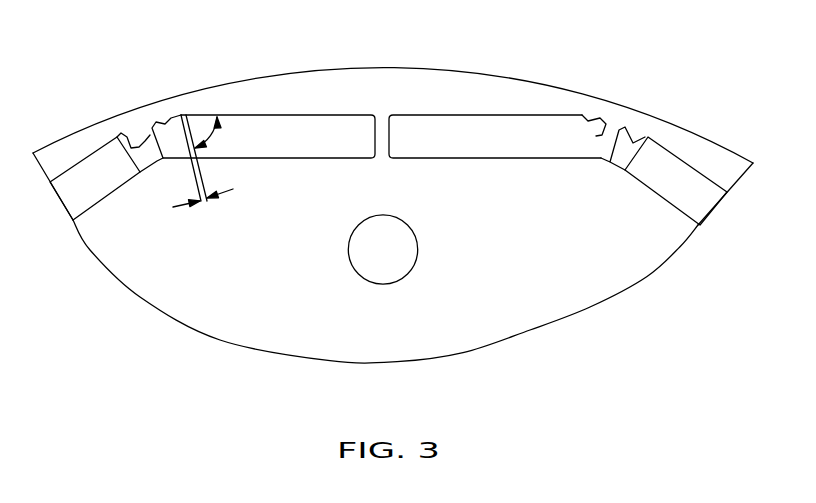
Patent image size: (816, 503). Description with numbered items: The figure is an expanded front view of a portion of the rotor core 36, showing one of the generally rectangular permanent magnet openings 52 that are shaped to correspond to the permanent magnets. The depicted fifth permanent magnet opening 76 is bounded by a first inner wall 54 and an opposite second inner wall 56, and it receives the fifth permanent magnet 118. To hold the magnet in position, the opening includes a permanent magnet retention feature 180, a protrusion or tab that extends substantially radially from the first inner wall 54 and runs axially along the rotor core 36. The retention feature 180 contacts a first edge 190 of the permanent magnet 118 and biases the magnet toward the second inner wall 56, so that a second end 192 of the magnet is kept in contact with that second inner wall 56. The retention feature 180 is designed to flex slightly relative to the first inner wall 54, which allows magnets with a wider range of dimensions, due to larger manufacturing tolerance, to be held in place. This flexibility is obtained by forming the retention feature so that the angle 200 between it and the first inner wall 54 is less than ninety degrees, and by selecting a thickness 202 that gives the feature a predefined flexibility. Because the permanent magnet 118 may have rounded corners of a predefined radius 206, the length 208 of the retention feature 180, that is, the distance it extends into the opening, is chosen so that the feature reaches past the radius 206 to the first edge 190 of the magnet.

The rotor core 36 is at (619, 104).
The permanent magnet openings 52 is at (72, 146).
The first inner wall 54 is at (170, 114).
The second inner wall 56 is at (375, 144).
The fifth permanent magnet opening 76 is at (279, 143).
The fifth permanent magnet 118 is at (180, 147).
The permanent magnet retention feature 180 is at (147, 138).
The first edge 190 is at (186, 117).
The second end 192 is at (371, 116).
The angle 200 is at (219, 119).
The thickness 202 is at (222, 196).
The radius 206 is at (583, 116).
The length 208 is at (607, 150).